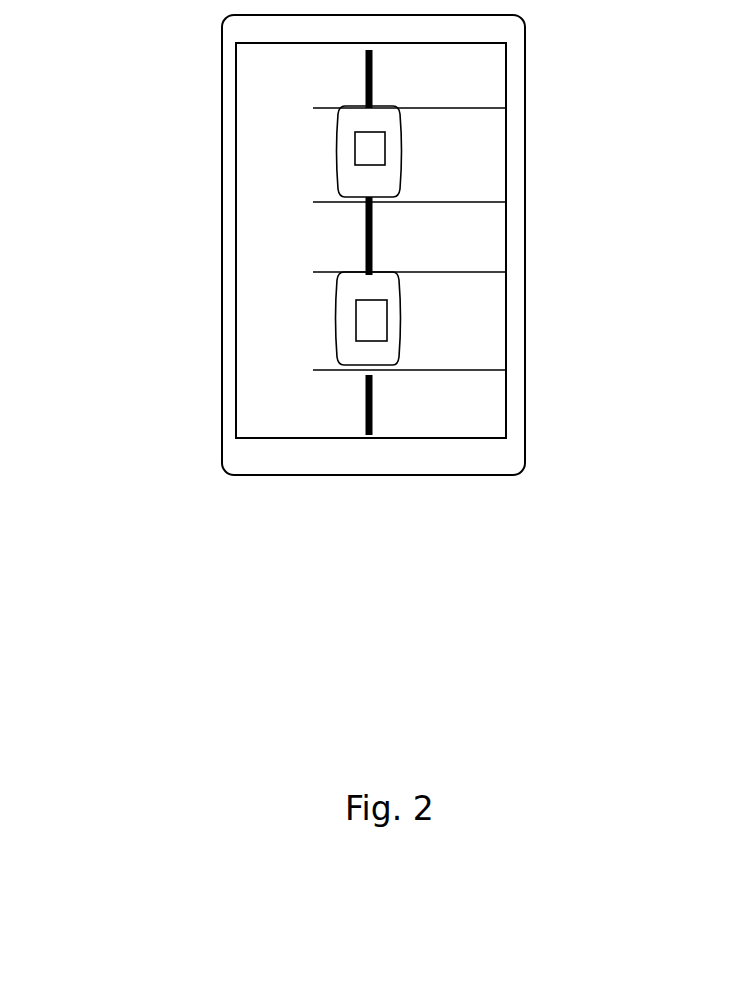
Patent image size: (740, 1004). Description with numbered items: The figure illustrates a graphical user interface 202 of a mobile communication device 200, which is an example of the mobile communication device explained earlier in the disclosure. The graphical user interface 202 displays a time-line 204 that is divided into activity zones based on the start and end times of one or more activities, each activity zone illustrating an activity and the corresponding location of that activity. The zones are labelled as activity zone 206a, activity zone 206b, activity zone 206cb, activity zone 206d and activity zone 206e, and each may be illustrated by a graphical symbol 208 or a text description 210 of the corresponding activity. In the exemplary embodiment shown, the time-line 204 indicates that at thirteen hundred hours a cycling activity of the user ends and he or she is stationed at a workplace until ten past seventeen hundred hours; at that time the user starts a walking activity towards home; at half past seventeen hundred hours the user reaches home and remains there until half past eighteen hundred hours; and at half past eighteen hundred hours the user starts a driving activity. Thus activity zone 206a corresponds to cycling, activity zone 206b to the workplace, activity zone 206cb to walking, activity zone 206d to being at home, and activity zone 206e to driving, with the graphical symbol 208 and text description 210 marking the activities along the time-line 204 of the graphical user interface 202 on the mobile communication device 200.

The mobile communication device 200 is at (243, 32).
The graphical user interface 202 is at (257, 72).
The time-line 204 is at (272, 127).
The activity zone 206a is at (482, 62).
The activity zone 206b is at (480, 185).
The walk activity segment 206cb is at (485, 255).
The activity zone 206d is at (480, 323).
The activity zone 206e is at (492, 413).
The graphical symbol 208 is at (395, 124).
The text description 210 is at (373, 157).